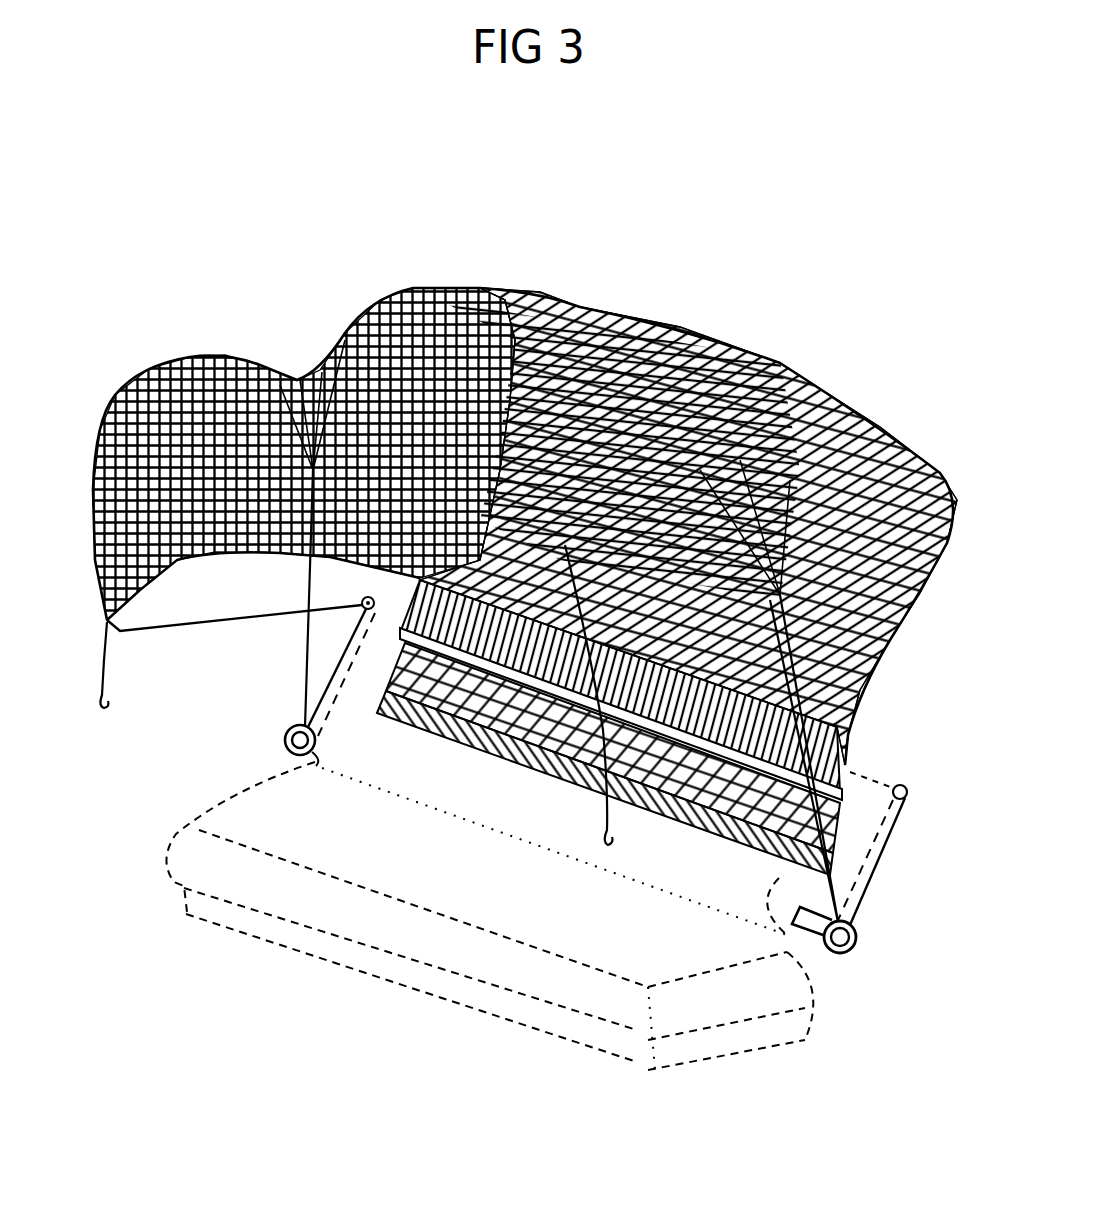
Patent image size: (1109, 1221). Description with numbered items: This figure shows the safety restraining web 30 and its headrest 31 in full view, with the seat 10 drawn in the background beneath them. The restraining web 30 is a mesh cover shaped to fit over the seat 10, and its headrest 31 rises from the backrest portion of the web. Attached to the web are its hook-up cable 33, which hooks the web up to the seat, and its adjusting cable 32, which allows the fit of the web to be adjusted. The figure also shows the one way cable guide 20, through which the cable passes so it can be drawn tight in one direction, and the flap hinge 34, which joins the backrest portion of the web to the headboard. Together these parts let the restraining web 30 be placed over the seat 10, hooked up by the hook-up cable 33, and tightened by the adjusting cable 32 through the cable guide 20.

The seat 10 is at (397, 987).
The one way cable guide 20 is at (857, 957).
The restraining web 30 is at (575, 304).
The headrest 31 is at (867, 763).
The adjusting cable 32 is at (300, 703).
The hook-up cable 33 is at (113, 687).
The flap hinge 34 is at (382, 643).